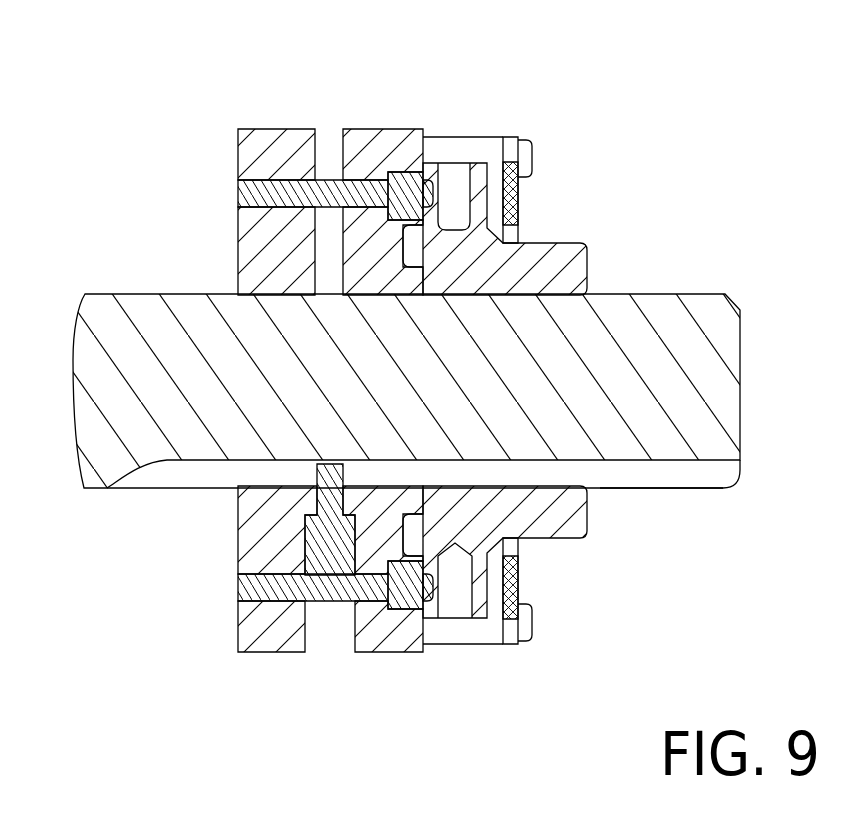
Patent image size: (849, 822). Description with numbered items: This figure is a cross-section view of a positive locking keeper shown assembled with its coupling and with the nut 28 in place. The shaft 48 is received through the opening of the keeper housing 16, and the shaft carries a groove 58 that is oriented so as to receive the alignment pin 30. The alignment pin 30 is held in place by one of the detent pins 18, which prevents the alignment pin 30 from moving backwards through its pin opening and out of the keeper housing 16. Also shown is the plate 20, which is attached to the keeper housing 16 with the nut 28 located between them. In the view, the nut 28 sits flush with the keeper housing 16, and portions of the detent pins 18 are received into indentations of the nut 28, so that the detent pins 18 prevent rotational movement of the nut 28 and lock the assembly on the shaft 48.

The keeper housing 16 is at (281, 128).
The detent pins 18 is at (280, 197).
The plate 20 is at (513, 148).
The nut 28 is at (578, 272).
The alignment pin 30 is at (327, 537).
The shaft 48 is at (167, 338).
The groove 58 is at (695, 473).